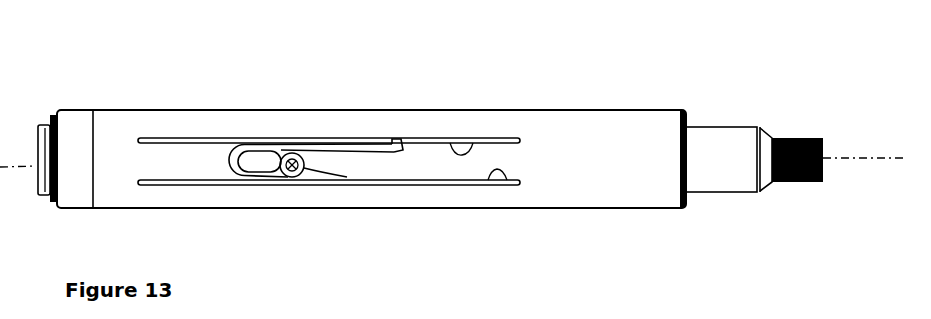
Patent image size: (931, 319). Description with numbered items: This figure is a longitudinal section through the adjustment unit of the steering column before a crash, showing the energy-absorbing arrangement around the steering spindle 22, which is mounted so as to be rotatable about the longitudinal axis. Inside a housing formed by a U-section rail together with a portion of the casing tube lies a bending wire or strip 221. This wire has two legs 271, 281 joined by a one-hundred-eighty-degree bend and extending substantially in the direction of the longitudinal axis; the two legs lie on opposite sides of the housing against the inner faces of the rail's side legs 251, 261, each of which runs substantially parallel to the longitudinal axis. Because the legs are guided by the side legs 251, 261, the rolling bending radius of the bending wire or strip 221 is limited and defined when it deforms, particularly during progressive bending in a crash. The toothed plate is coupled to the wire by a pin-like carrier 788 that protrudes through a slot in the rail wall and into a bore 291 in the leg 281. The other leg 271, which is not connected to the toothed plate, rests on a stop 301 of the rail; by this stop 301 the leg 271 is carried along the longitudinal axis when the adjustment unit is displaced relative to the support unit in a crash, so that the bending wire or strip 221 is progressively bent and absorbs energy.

The steering spindle 22 is at (705, 175).
The bending wire or strip 221 is at (229, 151).
The side leg 251 is at (476, 142).
The side leg 261 is at (512, 184).
The leg 271 is at (333, 143).
The leg 281 is at (252, 182).
The bore 291 is at (347, 177).
The stop 301 is at (399, 146).
The carrier 788 is at (294, 171).